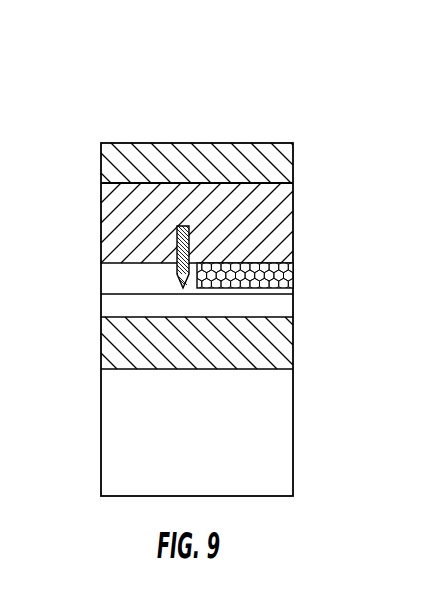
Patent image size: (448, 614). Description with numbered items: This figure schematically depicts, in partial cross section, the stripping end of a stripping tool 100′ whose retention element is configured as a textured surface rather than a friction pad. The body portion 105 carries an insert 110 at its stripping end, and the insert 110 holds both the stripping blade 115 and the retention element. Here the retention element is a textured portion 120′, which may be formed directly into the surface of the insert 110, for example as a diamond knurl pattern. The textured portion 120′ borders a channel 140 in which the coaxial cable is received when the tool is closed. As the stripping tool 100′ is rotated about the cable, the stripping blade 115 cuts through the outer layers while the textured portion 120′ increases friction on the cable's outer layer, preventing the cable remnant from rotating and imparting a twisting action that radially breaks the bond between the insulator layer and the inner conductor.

The stripping tool 100′ is at (298, 82).
The body portion 105 is at (295, 163).
The insert 110 is at (213, 195).
The stripping blade 115 is at (180, 226).
The textured portion 120′ is at (293, 275).
The channel 140 is at (104, 299).